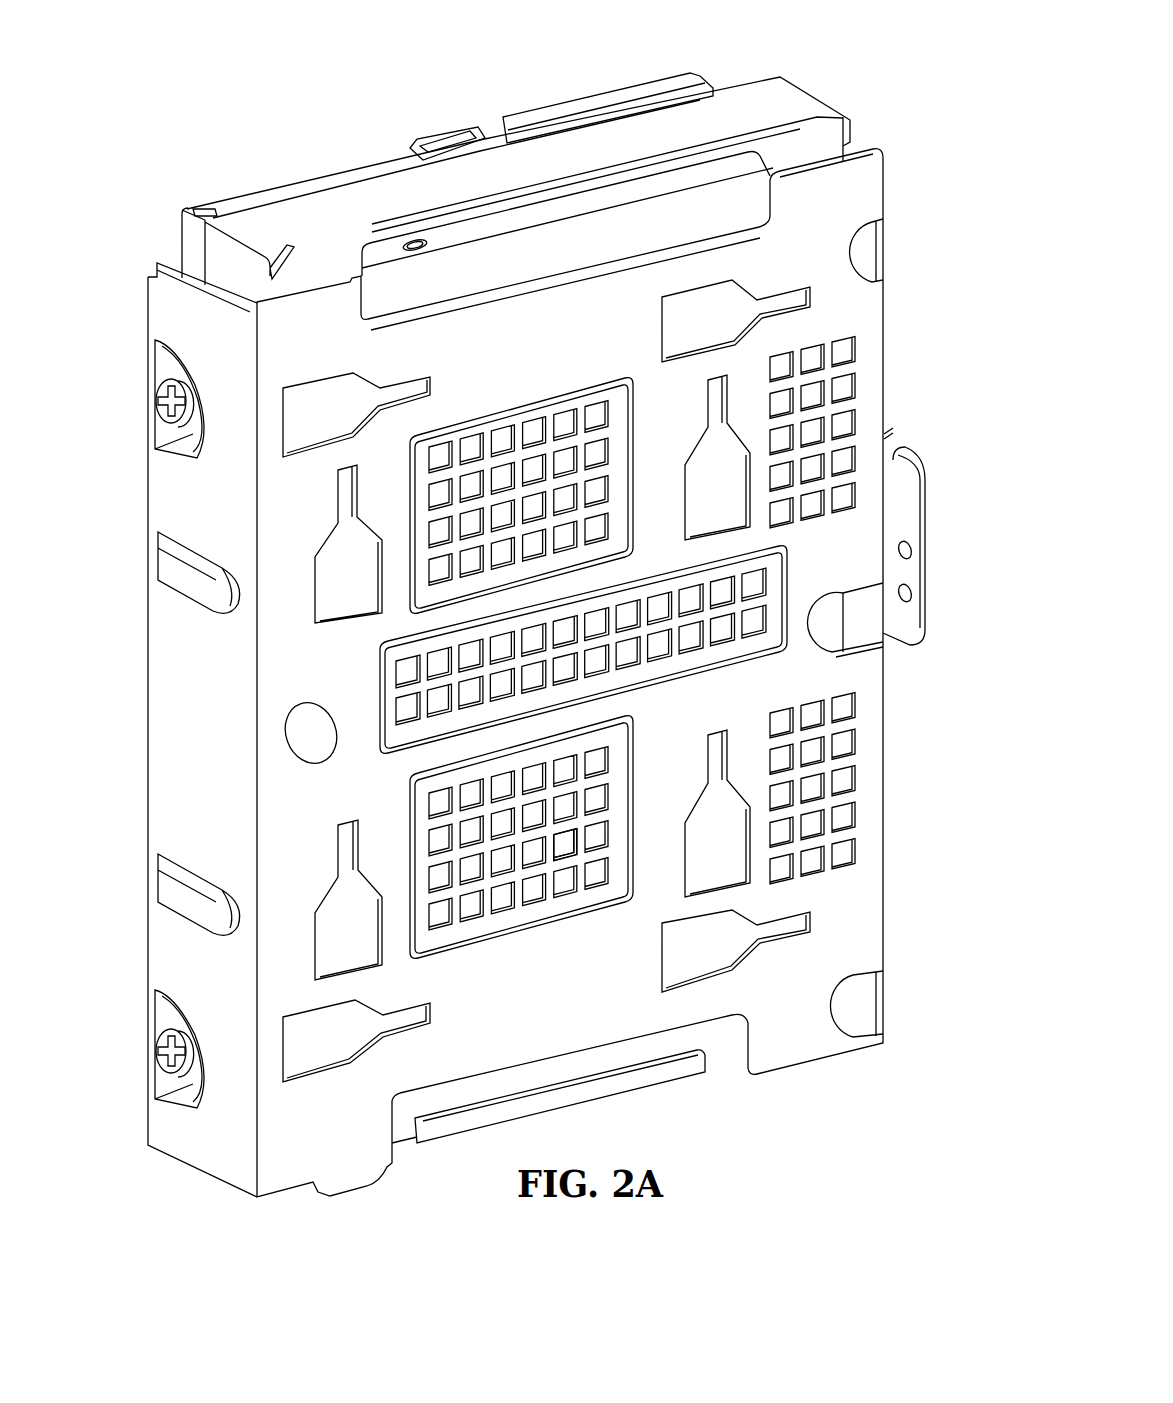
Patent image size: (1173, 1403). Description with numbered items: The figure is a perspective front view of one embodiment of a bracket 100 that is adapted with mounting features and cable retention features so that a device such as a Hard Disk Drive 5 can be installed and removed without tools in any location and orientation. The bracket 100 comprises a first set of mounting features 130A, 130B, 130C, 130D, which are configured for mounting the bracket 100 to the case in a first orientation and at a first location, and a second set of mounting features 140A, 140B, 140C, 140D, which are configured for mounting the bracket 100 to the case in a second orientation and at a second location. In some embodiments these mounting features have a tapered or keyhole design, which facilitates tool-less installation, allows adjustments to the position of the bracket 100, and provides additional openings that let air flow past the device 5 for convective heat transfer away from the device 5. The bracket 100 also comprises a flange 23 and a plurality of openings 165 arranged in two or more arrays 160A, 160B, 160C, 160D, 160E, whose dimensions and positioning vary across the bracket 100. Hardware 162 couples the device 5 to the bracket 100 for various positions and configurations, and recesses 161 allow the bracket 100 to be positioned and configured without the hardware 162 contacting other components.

The Hard Disk Drive 5 is at (810, 85).
The flange 23 is at (573, 228).
The bracket 100 is at (887, 293).
The mounting feature 130A is at (790, 300).
The mounting feature 130B is at (777, 923).
The mounting feature 130C is at (308, 1060).
The mounting feature 130D is at (306, 415).
The mounting feature 140A is at (707, 403).
The mounting feature 140B is at (686, 848).
The mounting feature 140C is at (337, 847).
The mounting feature 140D is at (318, 605).
The array 160A is at (502, 945).
The array 160B is at (370, 700).
The array 160C is at (508, 395).
The array 160D is at (896, 683).
The array 160E is at (896, 324).
The recess 161 is at (185, 452).
The hardware 162 is at (157, 410).
The opening 165 is at (563, 877).